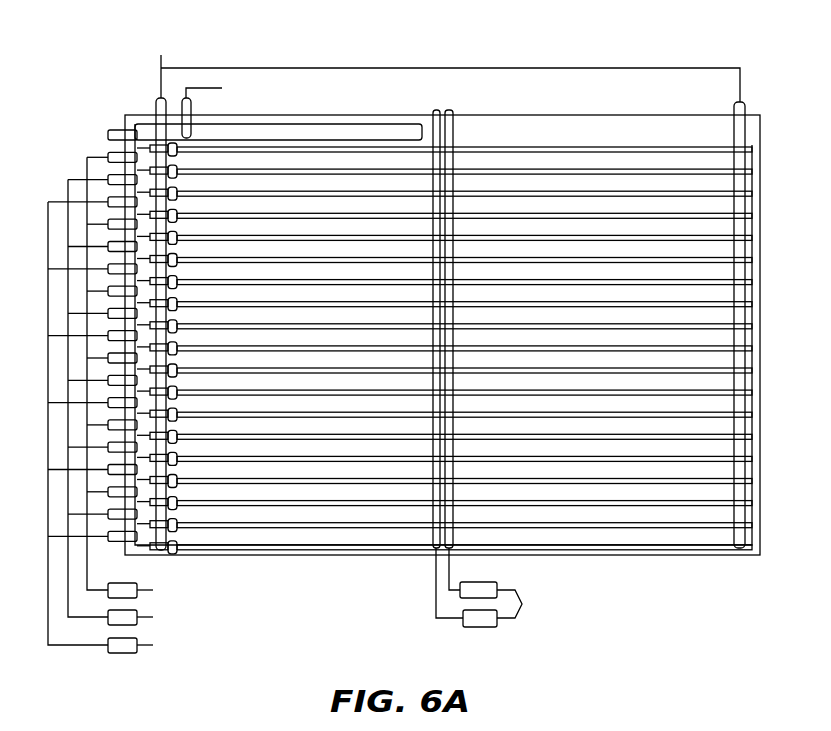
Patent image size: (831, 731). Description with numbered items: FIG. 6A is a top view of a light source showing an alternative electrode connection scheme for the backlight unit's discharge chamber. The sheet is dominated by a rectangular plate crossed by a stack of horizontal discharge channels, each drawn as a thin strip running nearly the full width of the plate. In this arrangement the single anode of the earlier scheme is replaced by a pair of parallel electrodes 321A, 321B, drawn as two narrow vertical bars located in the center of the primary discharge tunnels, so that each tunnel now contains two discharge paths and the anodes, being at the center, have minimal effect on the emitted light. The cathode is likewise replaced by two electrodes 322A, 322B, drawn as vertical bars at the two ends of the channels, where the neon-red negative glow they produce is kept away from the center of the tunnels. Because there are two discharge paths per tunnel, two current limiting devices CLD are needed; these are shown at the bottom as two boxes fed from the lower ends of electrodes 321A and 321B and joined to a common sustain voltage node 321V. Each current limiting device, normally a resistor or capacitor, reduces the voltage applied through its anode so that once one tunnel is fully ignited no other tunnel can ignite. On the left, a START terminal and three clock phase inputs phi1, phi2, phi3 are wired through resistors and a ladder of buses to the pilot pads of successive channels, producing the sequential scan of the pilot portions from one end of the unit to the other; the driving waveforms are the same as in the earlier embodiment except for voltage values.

The start signal input START is at (71, 86).
The phase 1 clock input phi1 is at (164, 577).
The phase 2 clock input phi2 is at (164, 604).
The phase 3 clock input phi3 is at (164, 632).
The cathode electrode 322A is at (156, 101).
The cathode electrode 322B is at (735, 104).
The parallel anode electrode 321A is at (434, 110).
The parallel anode electrode 321B is at (452, 110).
The sustain voltage output 321V is at (522, 604).
The current limiting device CLD is at (475, 592).